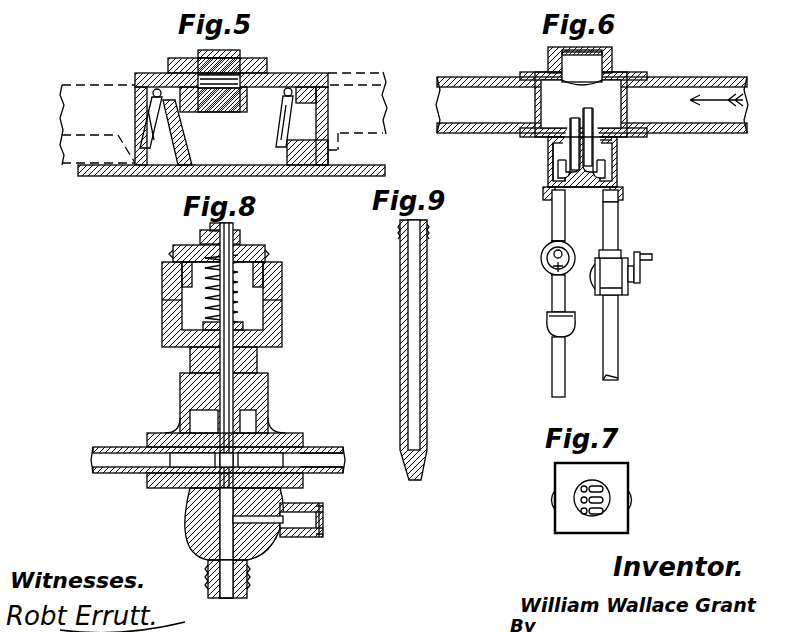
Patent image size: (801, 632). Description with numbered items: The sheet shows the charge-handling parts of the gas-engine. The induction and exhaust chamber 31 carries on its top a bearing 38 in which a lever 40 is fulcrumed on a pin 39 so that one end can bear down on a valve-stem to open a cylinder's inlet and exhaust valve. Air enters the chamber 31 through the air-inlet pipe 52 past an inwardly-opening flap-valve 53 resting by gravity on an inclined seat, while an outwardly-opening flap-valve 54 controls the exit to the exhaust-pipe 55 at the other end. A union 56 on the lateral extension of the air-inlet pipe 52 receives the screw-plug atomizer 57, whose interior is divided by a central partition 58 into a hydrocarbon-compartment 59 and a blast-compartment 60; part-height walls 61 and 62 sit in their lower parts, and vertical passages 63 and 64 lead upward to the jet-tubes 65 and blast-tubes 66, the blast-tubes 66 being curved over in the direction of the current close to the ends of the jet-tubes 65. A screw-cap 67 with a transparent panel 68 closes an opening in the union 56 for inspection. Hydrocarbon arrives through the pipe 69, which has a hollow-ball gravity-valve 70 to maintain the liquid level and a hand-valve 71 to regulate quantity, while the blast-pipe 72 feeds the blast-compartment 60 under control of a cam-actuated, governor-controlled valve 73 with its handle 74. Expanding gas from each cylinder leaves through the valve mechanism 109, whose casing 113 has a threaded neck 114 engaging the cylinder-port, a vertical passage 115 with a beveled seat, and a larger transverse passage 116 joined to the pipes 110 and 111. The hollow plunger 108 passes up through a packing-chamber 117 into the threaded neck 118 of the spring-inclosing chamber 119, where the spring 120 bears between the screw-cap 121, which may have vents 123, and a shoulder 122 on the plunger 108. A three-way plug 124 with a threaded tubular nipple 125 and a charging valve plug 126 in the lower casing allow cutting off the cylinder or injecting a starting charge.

In FIG. 5, the induction and exhaust chamber 31 is at (231, 124).
In FIG. 5, the bearing 38 is at (250, 60).
In FIG. 5, the pin 39 is at (244, 95).
In FIG. 5, the lever 40 is at (204, 52).
In FIG. 5, the air-inlet pipe 52 is at (345, 75).
In FIG. 6, the air-inlet pipe 52 is at (592, 105).
In FIG. 5, the flap-valve 53 is at (291, 116).
In FIG. 5, the flap-valve 54 is at (160, 130).
In FIG. 5, the exhaust-pipe 55 is at (97, 125).
In FIG. 6, the union 56 is at (640, 72).
In FIG. 6, the atomizer 57 is at (618, 156).
In FIG. 7, the atomizer 57 is at (560, 477).
In FIG. 6, the central partition 58 is at (606, 172).
In FIG. 6, the hydrocarbon-compartment 59 is at (558, 205).
In FIG. 6, the blast-compartment 60 is at (597, 195).
In FIG. 6, the vertical wall 61 is at (556, 172).
In FIG. 6, the wall 62 is at (606, 165).
In FIG. 6, the vertical passages 63 is at (550, 158).
In FIG. 6, the exit-passages 64 is at (620, 142).
In FIG. 6, the jet-tubes 65 is at (571, 125).
In FIG. 7, the jet-tubes 65 is at (585, 499).
In FIG. 6, the blast-tubes 66 is at (588, 116).
In FIG. 7, the blast-tubes 66 is at (590, 497).
In FIG. 6, the screw-cap 67 is at (605, 57).
In FIG. 6, the transparent panel 68 is at (560, 52).
In FIG. 6, the pipe 69 is at (556, 377).
In FIG. 6, the gravity-valve 70 is at (541, 260).
In FIG. 6, the hand-valve 71 is at (549, 332).
In FIG. 6, the blast-pipe 72 is at (612, 230).
In FIG. 6, the governor-controlled valve 73 is at (620, 295).
In FIG. 6, the handle 74 is at (645, 270).
In FIG. 8, the plunger 108 is at (250, 421).
In FIG. 9, the plunger 108 is at (426, 458).
In FIG. 8, the valve mechanism 109 is at (205, 320).
In FIG. 8, the pipe 110 is at (109, 455).
In FIG. 8, the pipe 111 is at (337, 465).
In FIG. 8, the valve-casing 113 is at (195, 516).
In FIG. 8, the externally-threaded neck 114 is at (247, 578).
In FIG. 8, the vertical passage 115 is at (235, 597).
In FIG. 8, the transverse passage 116 is at (245, 460).
In FIG. 8, the packing-chamber 117 is at (268, 403).
In FIG. 8, the neck 118 is at (258, 365).
In FIG. 8, the spring-inclosing chamber 119 is at (262, 312).
In FIG. 8, the spring 120 is at (182, 298).
In FIG. 8, the screw-cap 121 is at (200, 236).
In FIG. 8, the shoulder 122 is at (244, 325).
In FIG. 8, the vents 123 is at (173, 253).
In FIG. 8, the three-way plug 124 is at (258, 528).
In FIG. 8, the threaded tubular nipple 125 is at (312, 533).
In FIG. 8, the charging valve plug 126 is at (300, 508).